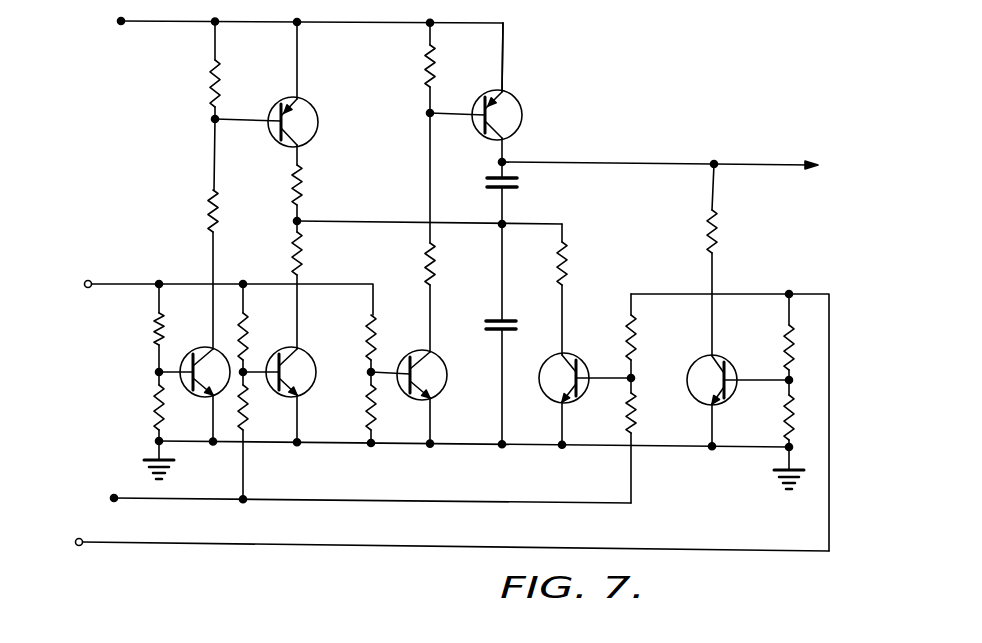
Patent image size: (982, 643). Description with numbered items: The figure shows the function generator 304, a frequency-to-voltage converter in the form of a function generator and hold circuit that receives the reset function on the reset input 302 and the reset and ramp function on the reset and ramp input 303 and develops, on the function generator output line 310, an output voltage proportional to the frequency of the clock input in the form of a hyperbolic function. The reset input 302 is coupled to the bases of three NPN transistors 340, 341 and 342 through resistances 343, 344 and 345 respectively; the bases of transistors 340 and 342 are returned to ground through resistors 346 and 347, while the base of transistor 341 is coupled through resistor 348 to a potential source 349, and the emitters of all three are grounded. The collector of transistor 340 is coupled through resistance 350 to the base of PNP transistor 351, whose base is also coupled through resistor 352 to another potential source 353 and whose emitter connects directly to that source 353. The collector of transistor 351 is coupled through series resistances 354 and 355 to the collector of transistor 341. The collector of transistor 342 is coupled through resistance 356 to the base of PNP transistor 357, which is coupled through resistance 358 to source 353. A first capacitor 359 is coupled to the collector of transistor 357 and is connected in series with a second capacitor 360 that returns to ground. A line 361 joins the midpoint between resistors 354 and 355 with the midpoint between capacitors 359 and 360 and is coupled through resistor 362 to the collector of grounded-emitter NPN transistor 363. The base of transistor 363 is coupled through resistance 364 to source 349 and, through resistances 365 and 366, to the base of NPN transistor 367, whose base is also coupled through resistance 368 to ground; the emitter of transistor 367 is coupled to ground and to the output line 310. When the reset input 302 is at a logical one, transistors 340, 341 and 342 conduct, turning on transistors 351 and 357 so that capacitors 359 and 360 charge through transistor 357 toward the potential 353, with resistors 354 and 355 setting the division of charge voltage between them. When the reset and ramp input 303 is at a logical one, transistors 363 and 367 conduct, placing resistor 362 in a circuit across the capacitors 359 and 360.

The reset input 302 is at (114, 287).
The reset and ramp input 303 is at (152, 546).
The function generator 304 is at (746, 102).
The function generator output line 310 is at (764, 163).
The NPN transistor 340 is at (195, 348).
The NPN transistor 341 is at (303, 354).
The NPN transistor 342 is at (428, 400).
The resistance 343 is at (156, 342).
The resistance 344 is at (285, 314).
The resistance 345 is at (376, 331).
The resistor 346 is at (156, 403).
The resistor 347 is at (367, 396).
The resistor 348 is at (245, 420).
The potential source 349 is at (114, 497).
The resistance 350 is at (206, 217).
The PNP transistor 351 is at (319, 128).
The resistor 352 is at (208, 86).
The potential source 353 is at (122, 24).
The resistance 354 is at (302, 200).
The resistance 355 is at (304, 254).
The resistance 356 is at (437, 256).
The PNP transistor 357 is at (523, 121).
The resistance 358 is at (428, 74).
The first capacitor 359 is at (521, 183).
The second capacitor 360 is at (501, 319).
The line 361 is at (404, 205).
The resistor 362 is at (571, 260).
The NPN transistor 363 is at (567, 354).
The resistance 364 is at (628, 414).
The resistance 365 is at (637, 341).
The resistance 366 is at (786, 345).
The NPN transistor 367 is at (704, 405).
The resistance 368 is at (784, 430).